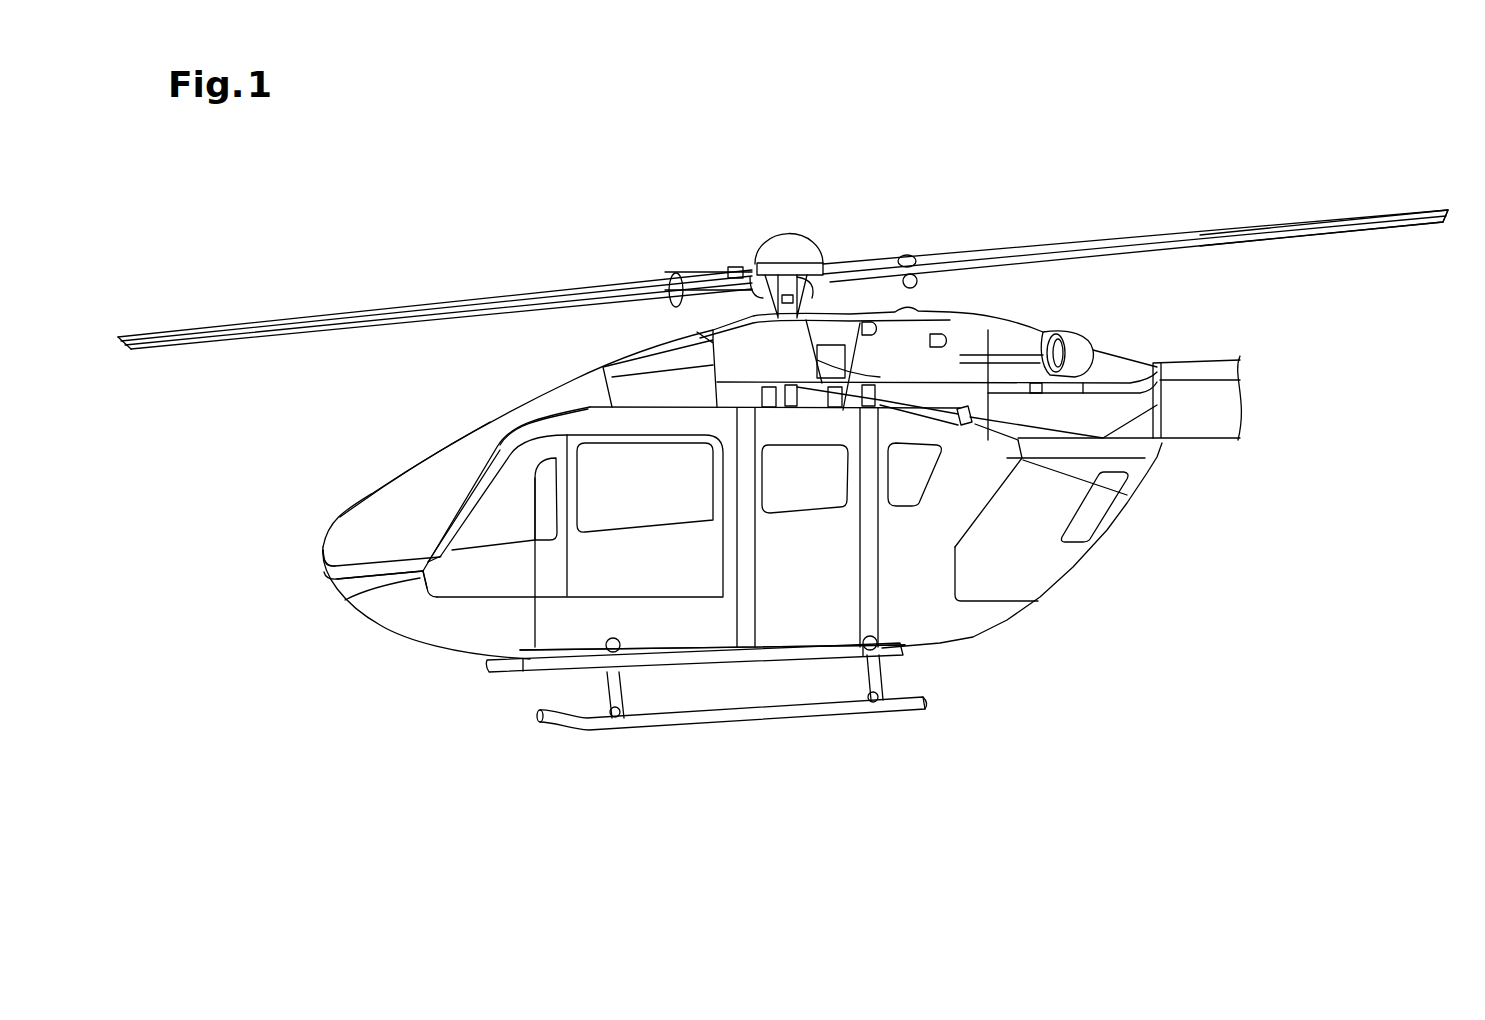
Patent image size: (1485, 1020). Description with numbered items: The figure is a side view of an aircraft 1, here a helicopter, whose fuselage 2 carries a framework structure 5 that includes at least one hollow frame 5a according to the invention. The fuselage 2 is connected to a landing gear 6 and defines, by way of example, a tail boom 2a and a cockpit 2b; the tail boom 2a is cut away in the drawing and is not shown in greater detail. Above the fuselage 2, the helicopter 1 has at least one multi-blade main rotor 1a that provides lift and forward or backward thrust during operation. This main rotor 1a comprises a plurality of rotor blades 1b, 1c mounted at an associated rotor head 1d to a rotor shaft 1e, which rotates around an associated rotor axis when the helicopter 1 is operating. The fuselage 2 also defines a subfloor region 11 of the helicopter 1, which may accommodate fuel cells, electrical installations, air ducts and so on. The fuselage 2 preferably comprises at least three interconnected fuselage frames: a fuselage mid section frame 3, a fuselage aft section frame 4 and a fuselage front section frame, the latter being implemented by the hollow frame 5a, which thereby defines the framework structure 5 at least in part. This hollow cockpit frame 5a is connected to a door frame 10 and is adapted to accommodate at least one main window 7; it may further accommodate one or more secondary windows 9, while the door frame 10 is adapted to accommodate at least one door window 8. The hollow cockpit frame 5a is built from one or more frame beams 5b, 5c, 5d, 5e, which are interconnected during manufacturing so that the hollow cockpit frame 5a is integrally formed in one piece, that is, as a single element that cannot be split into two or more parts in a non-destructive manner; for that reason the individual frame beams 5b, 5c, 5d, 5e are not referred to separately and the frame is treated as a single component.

The aircraft 1 is at (392, 232).
The multi-blade main rotor 1a is at (1055, 238).
The rotor blade 1b is at (285, 318).
The rotor blade 1c is at (1267, 233).
The rotor head 1d is at (830, 245).
The rotor shaft 1e is at (813, 317).
The fuselage 2 is at (983, 612).
The tail boom 2a is at (1213, 402).
The cockpit 2b is at (490, 533).
The fuselage mid section frame 3 is at (728, 613).
The fuselage aft section frame 4 is at (855, 598).
The framework structure 5 is at (316, 576).
The hollow frame 5a is at (436, 532).
The frame beam 5b is at (323, 545).
The frame beam 5c is at (360, 572).
The frame beam 5d is at (415, 577).
The frame beam 5e is at (468, 480).
The landing gear 6 is at (578, 740).
The main window 7 is at (453, 470).
The door window 8 is at (442, 567).
The secondary window 9 is at (378, 592).
The door frame 10 is at (450, 592).
The subfloor region 11 is at (910, 634).